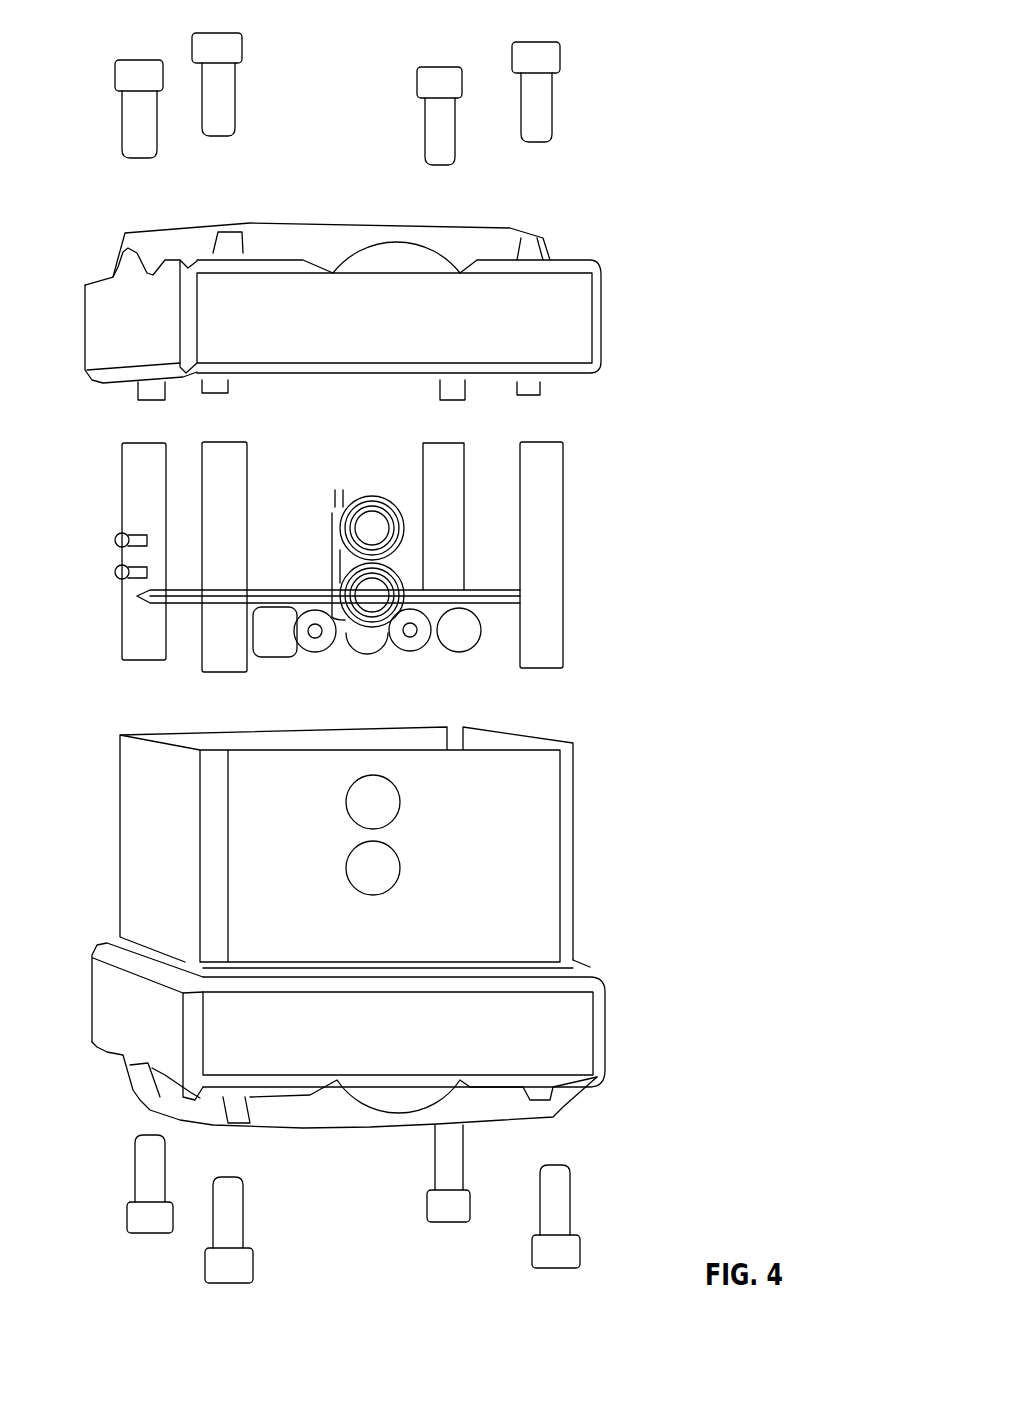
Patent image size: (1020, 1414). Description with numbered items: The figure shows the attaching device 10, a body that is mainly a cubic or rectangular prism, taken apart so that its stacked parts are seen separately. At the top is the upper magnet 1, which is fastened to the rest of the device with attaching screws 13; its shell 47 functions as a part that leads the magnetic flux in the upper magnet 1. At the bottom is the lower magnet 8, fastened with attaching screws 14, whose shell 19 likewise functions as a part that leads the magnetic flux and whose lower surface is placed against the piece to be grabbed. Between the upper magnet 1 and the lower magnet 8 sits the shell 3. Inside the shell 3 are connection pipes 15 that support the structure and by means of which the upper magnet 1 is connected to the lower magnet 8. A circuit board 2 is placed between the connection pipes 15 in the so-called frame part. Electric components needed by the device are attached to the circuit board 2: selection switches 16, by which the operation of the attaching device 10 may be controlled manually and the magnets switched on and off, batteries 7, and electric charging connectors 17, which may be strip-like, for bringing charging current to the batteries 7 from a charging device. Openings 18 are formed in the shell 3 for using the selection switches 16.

The attaching device 10 is at (726, 143).
The attaching screws 13 is at (540, 95).
The upper magnet 1 is at (575, 298).
The shell of the upper magnet 47 is at (577, 333).
The connection pipes 15 is at (547, 460).
The charging connectors 17 is at (118, 542).
The circuit board 2 is at (493, 592).
The batteries 7 is at (468, 632).
The selection switches 16 is at (382, 528).
The shell 3 is at (540, 828).
The openings 18 is at (400, 880).
The lower magnet 8 is at (578, 1002).
The shell of the lower magnet 19 is at (580, 1042).
The attaching screws 14 is at (565, 1198).